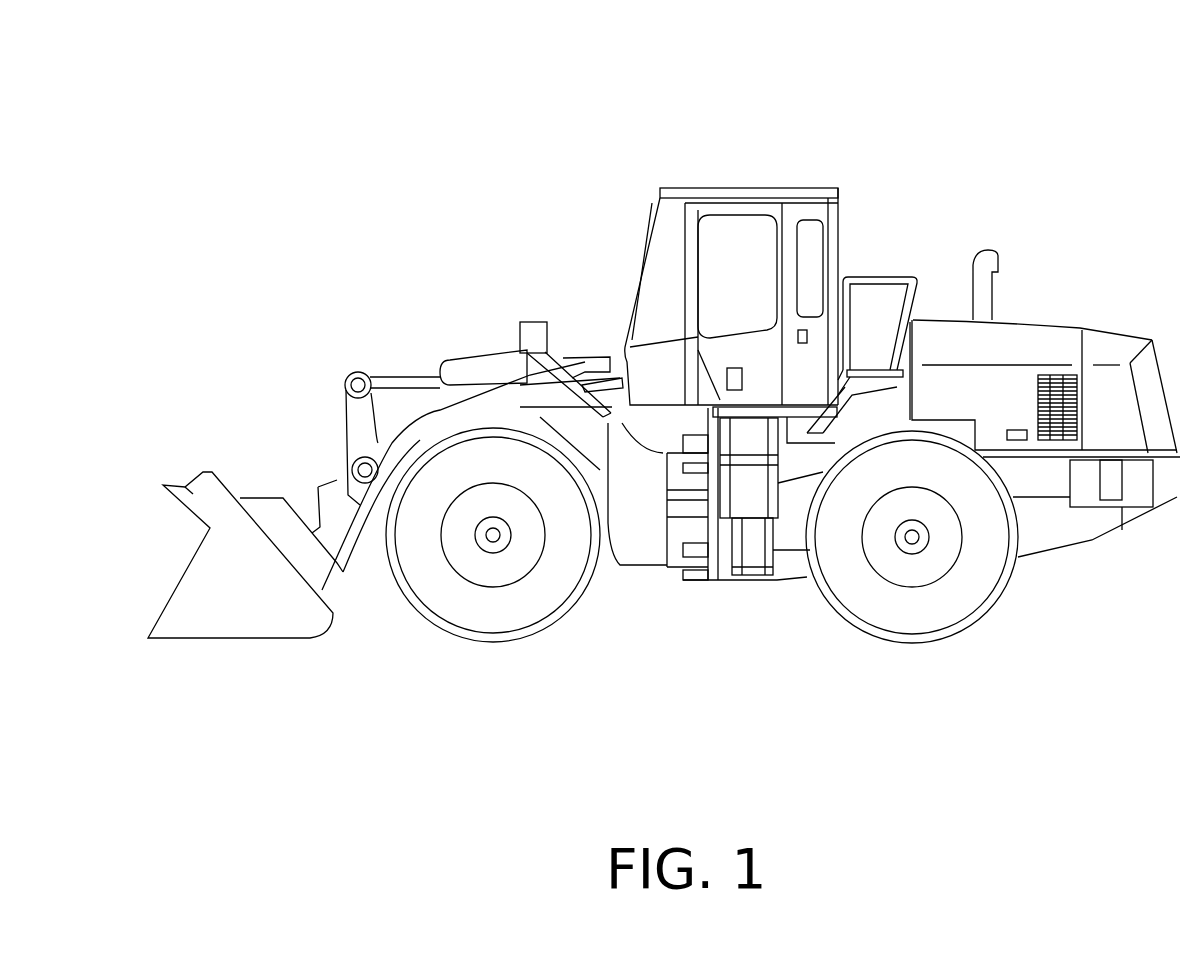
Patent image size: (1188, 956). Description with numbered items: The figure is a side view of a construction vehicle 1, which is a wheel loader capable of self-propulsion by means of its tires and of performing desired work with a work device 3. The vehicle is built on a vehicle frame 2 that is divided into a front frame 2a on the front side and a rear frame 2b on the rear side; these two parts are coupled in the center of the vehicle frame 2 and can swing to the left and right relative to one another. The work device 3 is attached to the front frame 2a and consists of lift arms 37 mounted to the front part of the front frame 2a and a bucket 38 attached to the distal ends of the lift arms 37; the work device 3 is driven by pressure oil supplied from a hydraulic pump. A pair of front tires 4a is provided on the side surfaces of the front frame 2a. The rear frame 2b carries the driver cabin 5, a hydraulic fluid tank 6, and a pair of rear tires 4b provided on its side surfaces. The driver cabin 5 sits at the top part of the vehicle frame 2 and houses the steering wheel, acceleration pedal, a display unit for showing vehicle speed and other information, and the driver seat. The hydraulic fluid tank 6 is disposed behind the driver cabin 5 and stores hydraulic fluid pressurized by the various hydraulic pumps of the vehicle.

The construction vehicle 1 is at (973, 98).
The vehicle frame 2 is at (734, 596).
The front frame 2a is at (643, 542).
The rear frame 2b is at (797, 545).
The work device 3 is at (148, 260).
The front tires 4a is at (505, 623).
The rear tires 4b is at (925, 623).
The driver cabin 5 is at (760, 183).
The hydraulic fluid tank 6 is at (872, 335).
The lift arms 37 is at (445, 430).
The bucket 38 is at (190, 478).